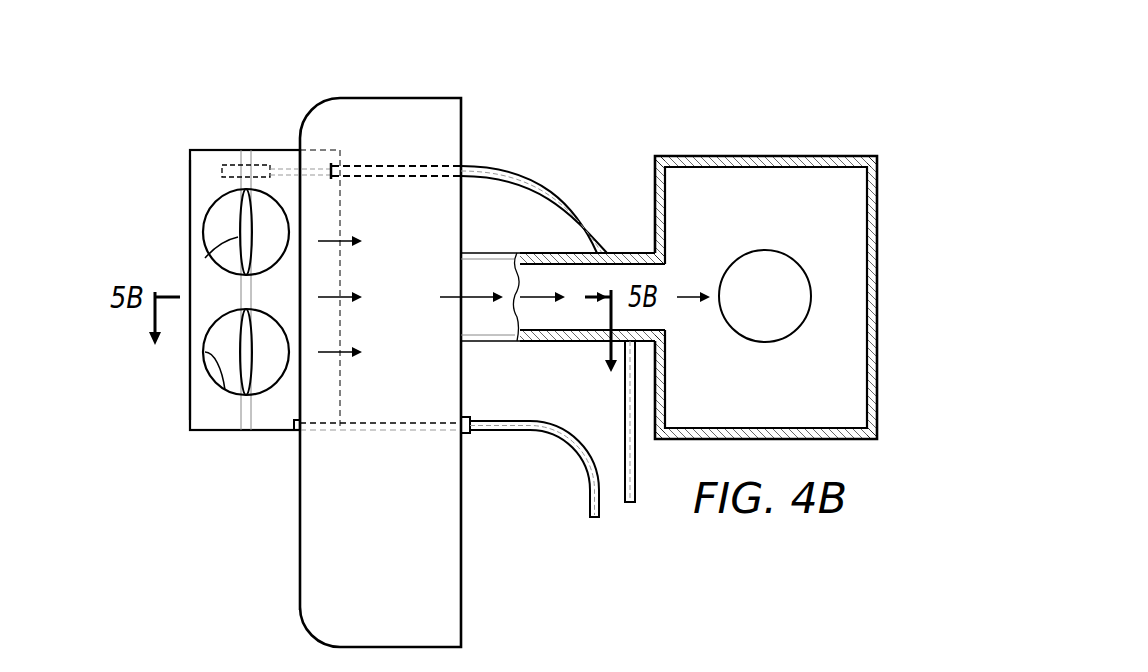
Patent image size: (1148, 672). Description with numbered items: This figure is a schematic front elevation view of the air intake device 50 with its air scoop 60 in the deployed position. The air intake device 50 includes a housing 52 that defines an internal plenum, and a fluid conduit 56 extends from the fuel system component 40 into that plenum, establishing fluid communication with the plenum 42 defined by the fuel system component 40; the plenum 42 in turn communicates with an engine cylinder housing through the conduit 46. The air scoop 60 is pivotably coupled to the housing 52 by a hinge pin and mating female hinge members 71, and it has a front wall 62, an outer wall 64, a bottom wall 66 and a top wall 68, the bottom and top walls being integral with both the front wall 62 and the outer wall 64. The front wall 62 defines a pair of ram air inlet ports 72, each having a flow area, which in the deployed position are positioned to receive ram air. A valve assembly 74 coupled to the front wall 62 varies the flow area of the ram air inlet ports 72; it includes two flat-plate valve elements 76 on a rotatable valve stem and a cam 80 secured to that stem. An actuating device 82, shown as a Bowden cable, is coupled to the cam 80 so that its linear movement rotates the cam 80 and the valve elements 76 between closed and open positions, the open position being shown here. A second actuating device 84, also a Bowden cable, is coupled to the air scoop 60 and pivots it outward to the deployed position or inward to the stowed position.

The fuel system component 40 is at (766, 267).
The plenum 42 is at (779, 224).
The conduit 46 is at (752, 343).
The air intake device 50 is at (374, 86).
The housing 52 is at (300, 515).
The fluid conduit 56 is at (573, 342).
The air scoop 60 is at (215, 279).
The front wall 62 is at (201, 181).
The outer wall 64 is at (190, 198).
The bottom wall 66 is at (262, 432).
The top wall 68 is at (276, 150).
The female hinge members 71 is at (312, 135).
The ram air inlet ports 72 is at (207, 233).
The valve assembly 74 is at (266, 353).
The valve elements 76 is at (205, 258).
The cam 80 is at (222, 170).
The actuating device 82 is at (556, 196).
The actuating device 84 is at (582, 466).